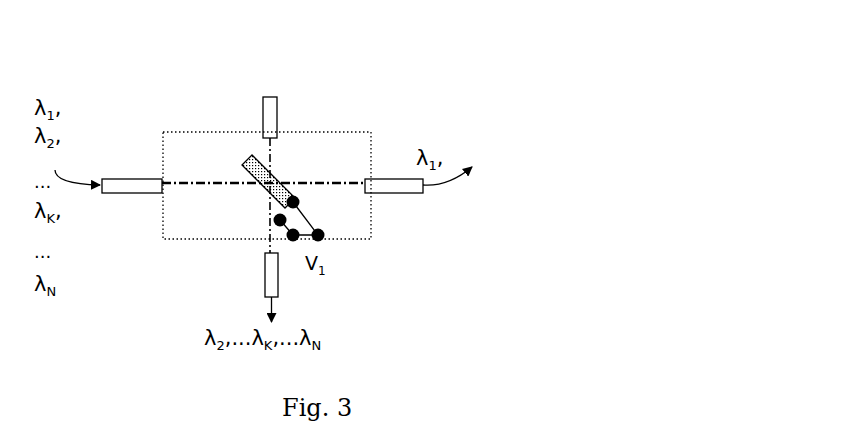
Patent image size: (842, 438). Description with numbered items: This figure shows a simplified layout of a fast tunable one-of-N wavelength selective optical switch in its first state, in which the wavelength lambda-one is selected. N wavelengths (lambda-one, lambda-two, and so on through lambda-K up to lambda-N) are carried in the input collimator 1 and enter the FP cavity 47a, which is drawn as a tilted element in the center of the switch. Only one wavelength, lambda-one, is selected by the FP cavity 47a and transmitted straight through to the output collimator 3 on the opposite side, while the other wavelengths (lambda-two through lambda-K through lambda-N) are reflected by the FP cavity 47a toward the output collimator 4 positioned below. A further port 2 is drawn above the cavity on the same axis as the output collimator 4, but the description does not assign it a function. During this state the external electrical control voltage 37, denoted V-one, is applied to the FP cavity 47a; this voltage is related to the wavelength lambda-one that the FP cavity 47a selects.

The input collimator 1 is at (125, 192).
The second port 2 is at (272, 108).
The output collimator 3 is at (392, 185).
The output collimator 4 is at (278, 262).
The external electrical control voltage 37 is at (318, 235).
The FP cavity 47a is at (257, 183).